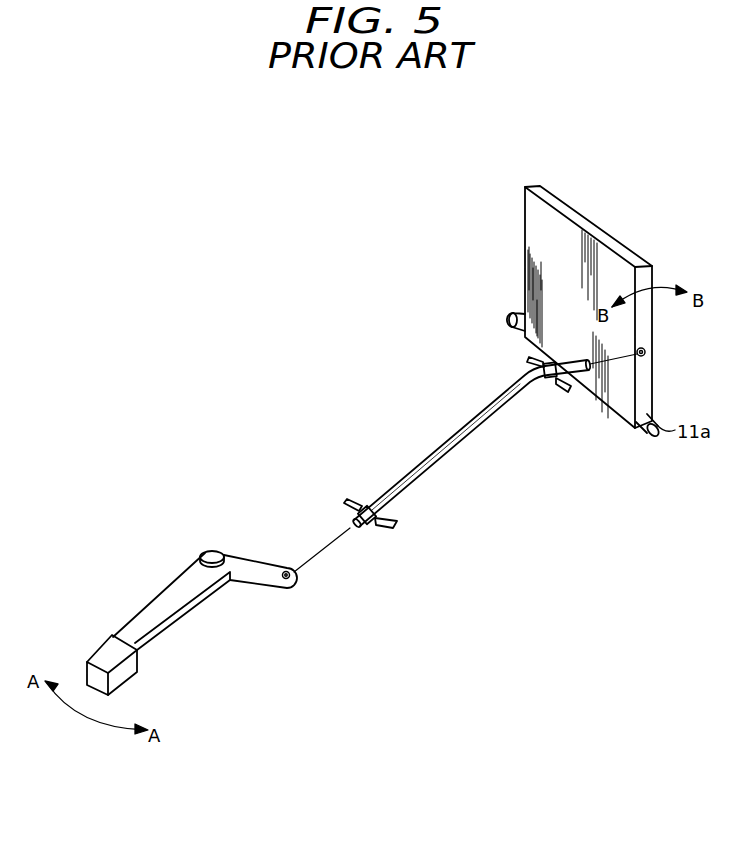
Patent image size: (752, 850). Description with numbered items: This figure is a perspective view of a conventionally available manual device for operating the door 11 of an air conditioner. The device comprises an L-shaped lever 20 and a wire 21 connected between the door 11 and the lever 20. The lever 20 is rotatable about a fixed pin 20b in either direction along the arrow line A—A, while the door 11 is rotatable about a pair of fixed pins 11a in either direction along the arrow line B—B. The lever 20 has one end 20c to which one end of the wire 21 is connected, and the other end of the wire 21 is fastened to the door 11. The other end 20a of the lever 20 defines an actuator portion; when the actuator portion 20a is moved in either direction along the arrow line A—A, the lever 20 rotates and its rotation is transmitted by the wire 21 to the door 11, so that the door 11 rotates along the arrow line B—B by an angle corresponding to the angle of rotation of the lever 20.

The door 11 is at (532, 220).
The fixed pins 11a is at (512, 317).
The L-shaped lever 20 is at (172, 595).
The actuator portion 20a is at (123, 675).
The fixed pin 20b is at (214, 551).
The lever end 20c is at (296, 586).
The wire 21 is at (337, 540).